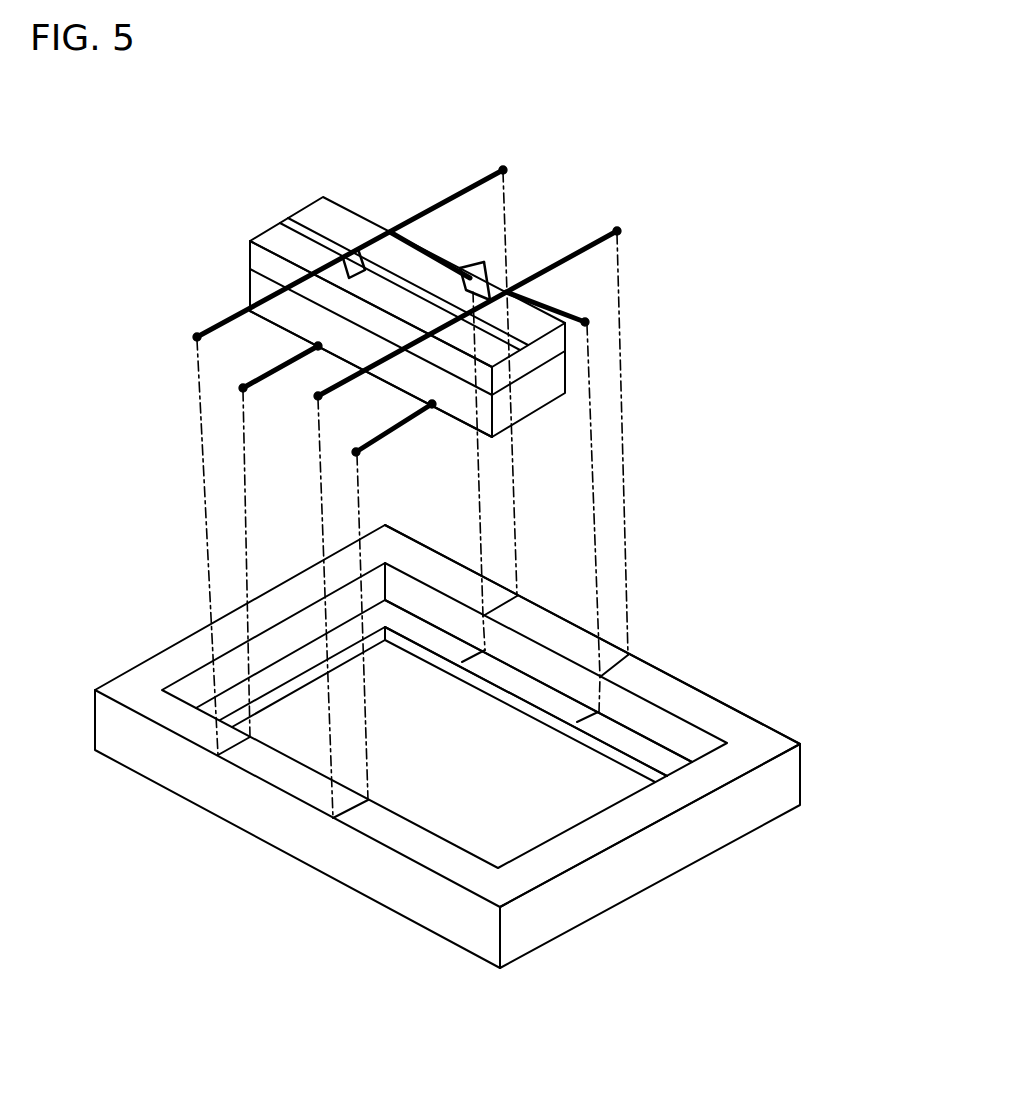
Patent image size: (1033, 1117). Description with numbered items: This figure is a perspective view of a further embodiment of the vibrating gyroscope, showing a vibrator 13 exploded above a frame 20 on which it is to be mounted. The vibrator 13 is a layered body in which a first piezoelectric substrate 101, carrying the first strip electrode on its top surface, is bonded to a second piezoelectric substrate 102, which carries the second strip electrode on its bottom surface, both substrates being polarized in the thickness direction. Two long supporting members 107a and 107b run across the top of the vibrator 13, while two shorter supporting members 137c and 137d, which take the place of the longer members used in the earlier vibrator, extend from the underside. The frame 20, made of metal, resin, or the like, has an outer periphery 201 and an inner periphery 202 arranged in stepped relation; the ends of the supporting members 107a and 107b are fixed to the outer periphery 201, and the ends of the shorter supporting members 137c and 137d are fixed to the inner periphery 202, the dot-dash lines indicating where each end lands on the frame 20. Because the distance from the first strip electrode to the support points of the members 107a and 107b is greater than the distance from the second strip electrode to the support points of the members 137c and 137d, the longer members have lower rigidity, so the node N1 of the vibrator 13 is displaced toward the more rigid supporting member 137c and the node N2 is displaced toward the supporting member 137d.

The vibrator 13 is at (278, 223).
The first piezoelectric substrate 101 is at (258, 256).
The second piezoelectric substrate 102 is at (260, 288).
The supporting member 107a is at (350, 237).
The supporting member 107b is at (467, 285).
The supporting member 137c is at (280, 322).
The supporting member 137d is at (611, 337).
The node N1 is at (317, 349).
The node N2 is at (434, 404).
The frame 20 is at (128, 663).
The outer periphery 201 is at (693, 705).
The inner periphery 202 is at (623, 737).